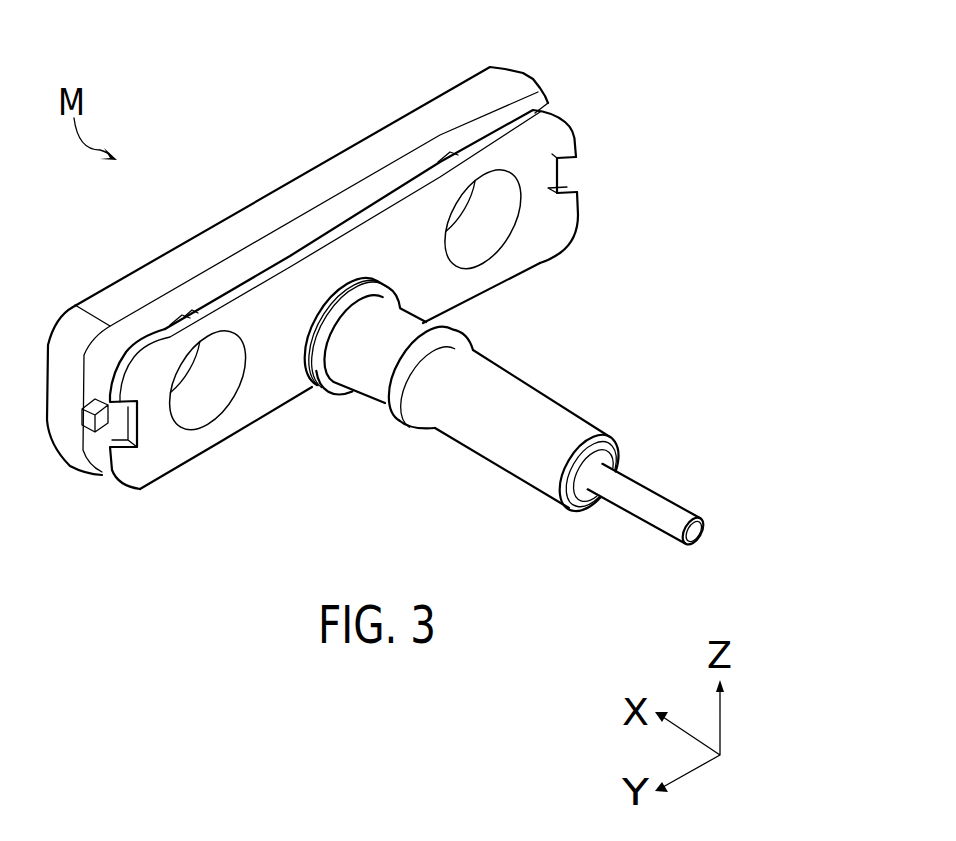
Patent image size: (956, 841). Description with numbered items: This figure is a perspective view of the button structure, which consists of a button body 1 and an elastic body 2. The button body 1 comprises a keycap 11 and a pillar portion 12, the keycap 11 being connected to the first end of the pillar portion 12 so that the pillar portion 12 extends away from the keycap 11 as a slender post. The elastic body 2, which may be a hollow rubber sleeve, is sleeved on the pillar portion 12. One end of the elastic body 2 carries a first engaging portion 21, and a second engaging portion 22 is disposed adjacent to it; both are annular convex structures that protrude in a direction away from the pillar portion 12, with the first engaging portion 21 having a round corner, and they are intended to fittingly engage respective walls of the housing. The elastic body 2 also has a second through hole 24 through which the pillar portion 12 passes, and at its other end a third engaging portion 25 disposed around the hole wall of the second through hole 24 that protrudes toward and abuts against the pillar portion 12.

The button body 1 is at (830, 9).
The elastic body 2 is at (544, 398).
The keycap 11 is at (292, 198).
The pillar portion 12 is at (640, 510).
The first engaging portion 21 is at (392, 274).
The second engaging portion 22 is at (402, 432).
The second through hole 24 is at (611, 452).
The third engaging portion 25 is at (580, 504).